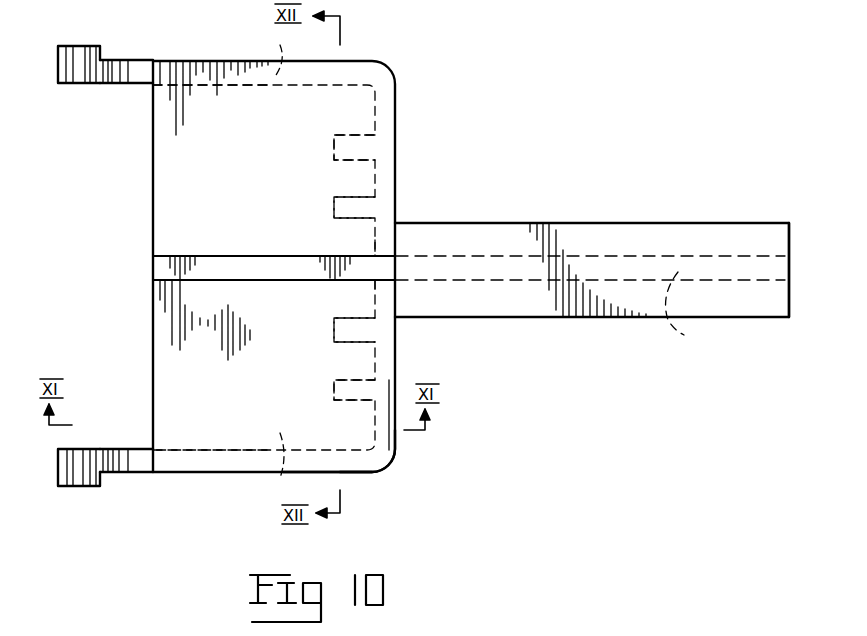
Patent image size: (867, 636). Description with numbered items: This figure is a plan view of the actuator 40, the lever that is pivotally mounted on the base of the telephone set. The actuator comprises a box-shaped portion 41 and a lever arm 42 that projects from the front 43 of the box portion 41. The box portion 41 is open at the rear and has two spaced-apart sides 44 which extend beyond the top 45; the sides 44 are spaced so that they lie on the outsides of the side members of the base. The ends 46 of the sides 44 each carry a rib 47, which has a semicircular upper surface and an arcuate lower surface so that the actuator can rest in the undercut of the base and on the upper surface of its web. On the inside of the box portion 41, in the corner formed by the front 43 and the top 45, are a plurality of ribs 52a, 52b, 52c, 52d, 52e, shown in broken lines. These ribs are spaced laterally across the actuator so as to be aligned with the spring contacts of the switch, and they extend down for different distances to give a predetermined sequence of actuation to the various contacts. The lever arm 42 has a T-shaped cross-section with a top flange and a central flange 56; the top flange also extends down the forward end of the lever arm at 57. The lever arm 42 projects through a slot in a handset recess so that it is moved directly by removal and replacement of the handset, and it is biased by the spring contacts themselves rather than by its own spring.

The actuator 40 is at (396, 70).
The box-shaped portion 41 is at (378, 455).
The lever arm 42 is at (603, 225).
The front 43 is at (383, 178).
The sides 44 is at (279, 46).
The top 45 is at (285, 478).
The ends of the sides 46 is at (110, 85).
The rib 47 is at (83, 53).
The rib 52a is at (336, 391).
The rib 52b is at (336, 331).
The rib 52c is at (352, 268).
The rib 52d is at (340, 208).
The rib 52e is at (340, 150).
The central flange 56 is at (689, 309).
The forward end extension of top flange 57 is at (762, 314).